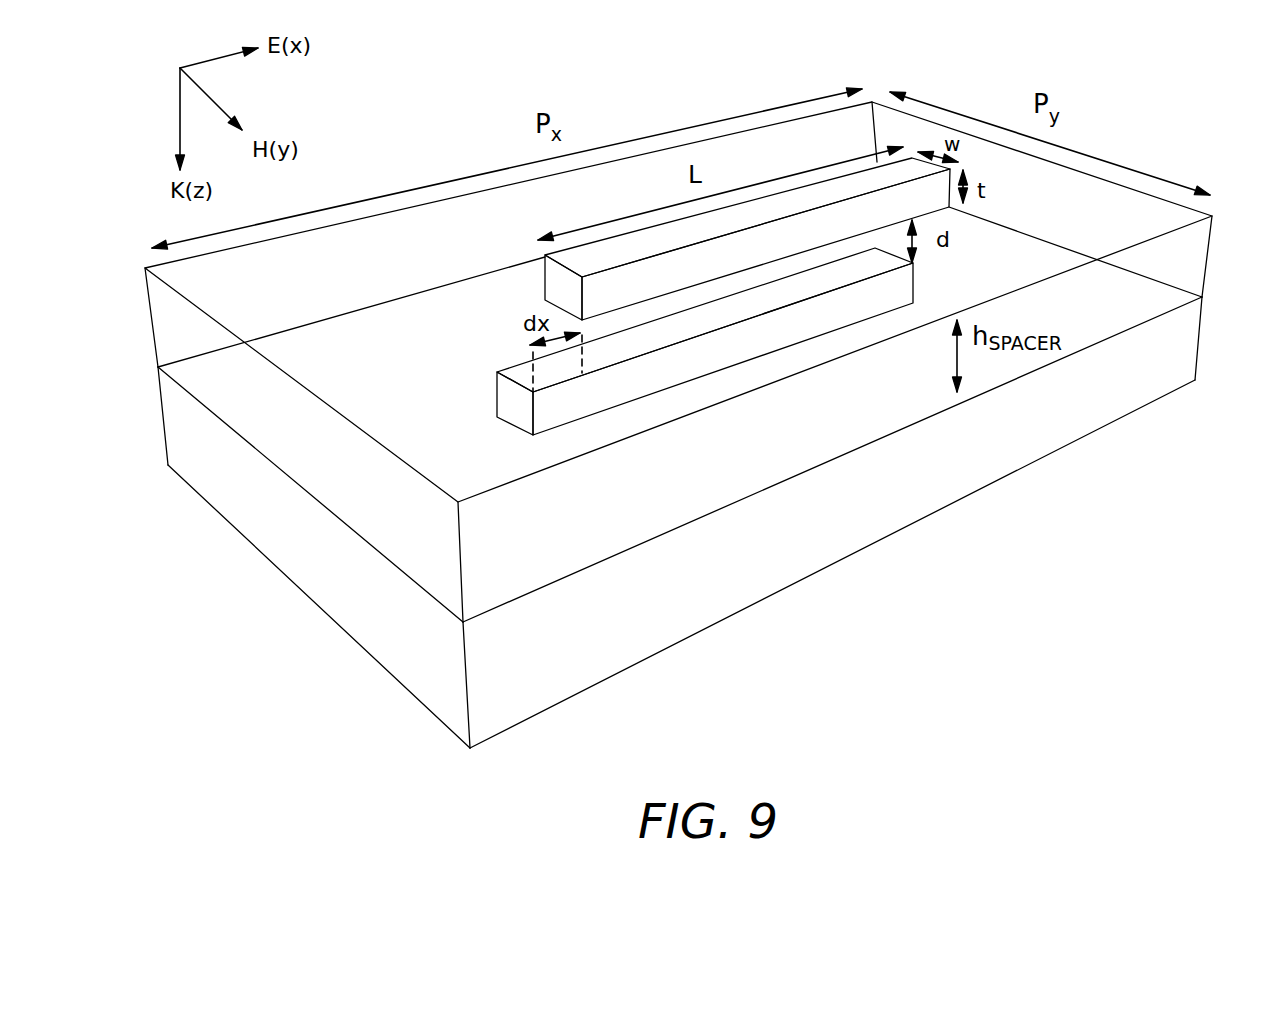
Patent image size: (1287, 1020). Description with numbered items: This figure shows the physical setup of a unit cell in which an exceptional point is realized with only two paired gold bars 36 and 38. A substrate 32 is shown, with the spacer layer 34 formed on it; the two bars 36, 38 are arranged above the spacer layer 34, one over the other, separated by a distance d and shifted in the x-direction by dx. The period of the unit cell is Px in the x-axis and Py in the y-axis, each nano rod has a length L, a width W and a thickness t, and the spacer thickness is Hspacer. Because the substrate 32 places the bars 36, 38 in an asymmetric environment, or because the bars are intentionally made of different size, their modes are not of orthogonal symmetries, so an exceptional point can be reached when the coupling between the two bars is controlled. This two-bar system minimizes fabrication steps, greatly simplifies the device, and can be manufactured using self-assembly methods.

The substrate 32 is at (1200, 344).
The spacer layer 34 is at (1208, 262).
The bar 36 is at (909, 170).
The bar 38 is at (893, 290).